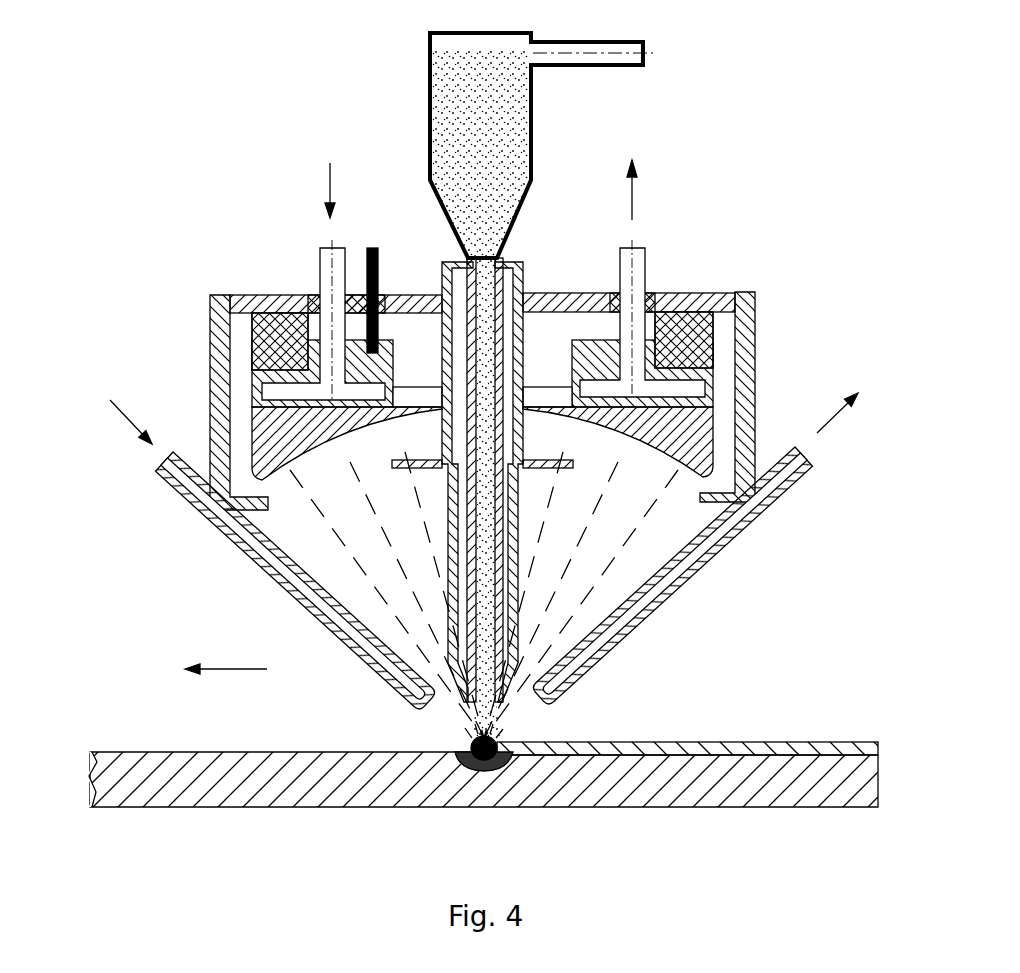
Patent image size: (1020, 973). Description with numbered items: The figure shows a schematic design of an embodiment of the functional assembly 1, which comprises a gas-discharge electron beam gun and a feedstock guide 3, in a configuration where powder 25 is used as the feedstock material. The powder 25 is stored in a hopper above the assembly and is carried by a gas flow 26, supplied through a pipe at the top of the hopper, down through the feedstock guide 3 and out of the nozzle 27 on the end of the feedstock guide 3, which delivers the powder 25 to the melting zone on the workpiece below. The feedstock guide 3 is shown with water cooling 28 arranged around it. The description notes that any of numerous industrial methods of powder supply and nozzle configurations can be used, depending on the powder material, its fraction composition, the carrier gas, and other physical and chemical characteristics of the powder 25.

The functional assembly 1 is at (277, 293).
The feedstock guide 3 is at (297, 480).
The powder 25 is at (458, 127).
The gas flow 26 is at (680, 52).
The nozzle 27 is at (537, 672).
The water cooling 28 is at (462, 533).